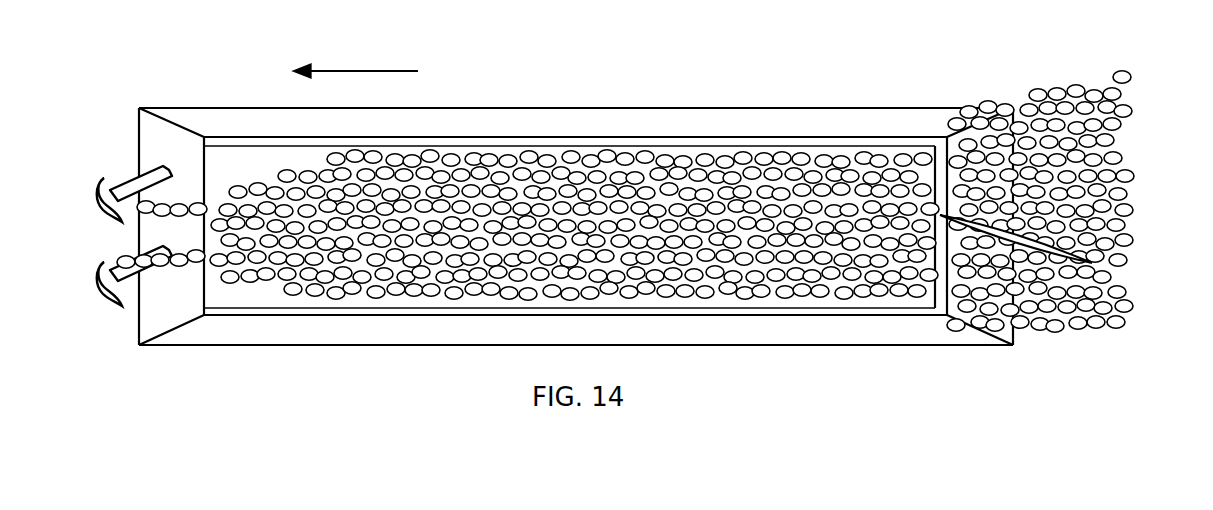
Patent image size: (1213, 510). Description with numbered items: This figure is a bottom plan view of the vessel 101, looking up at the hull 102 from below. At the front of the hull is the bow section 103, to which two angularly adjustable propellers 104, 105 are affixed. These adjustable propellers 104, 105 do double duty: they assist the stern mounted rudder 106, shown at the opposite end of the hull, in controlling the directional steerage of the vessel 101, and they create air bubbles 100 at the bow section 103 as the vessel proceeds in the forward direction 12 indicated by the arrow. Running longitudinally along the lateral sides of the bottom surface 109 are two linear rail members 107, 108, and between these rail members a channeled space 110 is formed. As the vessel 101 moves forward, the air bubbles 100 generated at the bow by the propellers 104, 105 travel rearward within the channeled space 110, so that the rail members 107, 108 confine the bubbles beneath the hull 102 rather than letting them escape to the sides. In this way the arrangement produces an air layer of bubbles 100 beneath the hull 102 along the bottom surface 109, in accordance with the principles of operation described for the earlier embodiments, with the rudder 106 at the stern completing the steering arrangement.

The forward direction 12 is at (378, 68).
The air bubbles 100 is at (1055, 330).
The vessel 101 is at (672, 109).
The hull 102 is at (462, 125).
The bow section 103 is at (178, 118).
The adjustable propeller 104 is at (122, 308).
The adjustable propeller 105 is at (104, 176).
The stern mounted rudder 106 is at (1025, 236).
The linear rail member 107 is at (558, 142).
The linear rail member 108 is at (695, 312).
The bottom surface 109 is at (880, 152).
The channeled space 110 is at (723, 225).